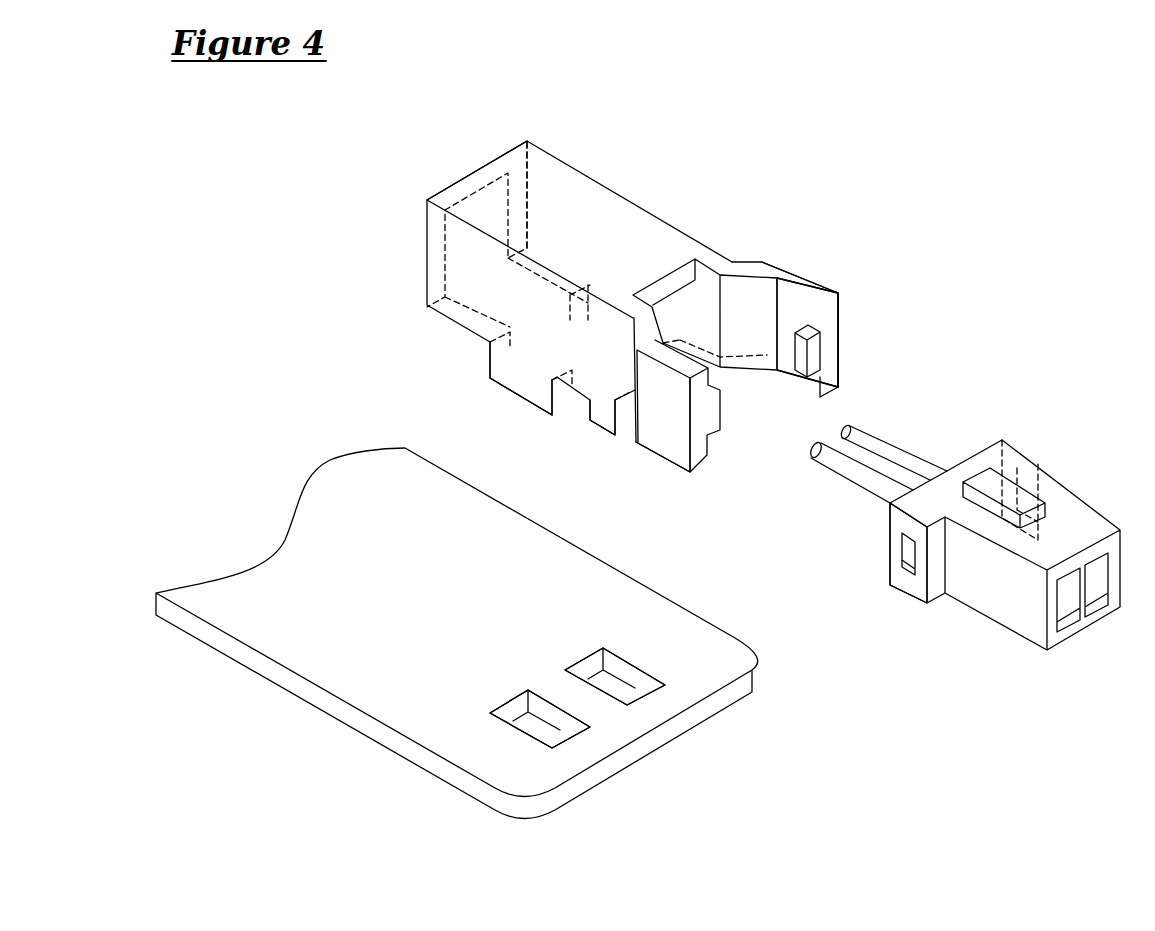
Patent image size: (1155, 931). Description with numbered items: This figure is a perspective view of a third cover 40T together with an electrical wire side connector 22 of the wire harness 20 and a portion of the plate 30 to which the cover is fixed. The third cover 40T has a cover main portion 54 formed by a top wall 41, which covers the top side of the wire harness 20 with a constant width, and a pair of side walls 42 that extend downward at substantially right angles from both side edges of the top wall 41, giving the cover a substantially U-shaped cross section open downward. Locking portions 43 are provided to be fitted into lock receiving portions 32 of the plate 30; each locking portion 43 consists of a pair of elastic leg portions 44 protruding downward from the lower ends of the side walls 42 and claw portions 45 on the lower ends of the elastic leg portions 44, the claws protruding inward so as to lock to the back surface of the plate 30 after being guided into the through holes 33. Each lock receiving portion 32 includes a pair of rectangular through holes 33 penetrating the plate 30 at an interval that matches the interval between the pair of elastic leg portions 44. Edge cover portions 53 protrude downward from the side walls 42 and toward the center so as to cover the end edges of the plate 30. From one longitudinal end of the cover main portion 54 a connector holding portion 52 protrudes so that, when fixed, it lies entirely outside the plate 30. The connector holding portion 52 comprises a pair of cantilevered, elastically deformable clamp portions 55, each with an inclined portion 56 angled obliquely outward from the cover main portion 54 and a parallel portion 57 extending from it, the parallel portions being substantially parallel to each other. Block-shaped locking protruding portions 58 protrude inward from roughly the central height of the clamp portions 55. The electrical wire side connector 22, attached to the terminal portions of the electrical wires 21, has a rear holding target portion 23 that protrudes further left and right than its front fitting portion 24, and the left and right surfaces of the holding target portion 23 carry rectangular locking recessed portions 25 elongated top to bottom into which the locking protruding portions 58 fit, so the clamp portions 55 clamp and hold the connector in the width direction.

The third cover 40T is at (663, 298).
The top wall 41 is at (598, 200).
The side walls 42 is at (618, 240).
The locking portions 43 is at (575, 437).
The elastic leg portions 44 is at (632, 300).
The claw portions 45 is at (612, 340).
The connector holding portion 52 is at (817, 283).
The edge cover portions 53 is at (682, 388).
The cover main portion 54 is at (543, 178).
The clamp portions 55 is at (705, 453).
The inclined portions 56 is at (755, 290).
The parallel portions 57 is at (808, 313).
The locking protruding portions 58 is at (722, 398).
The wire harness 20 is at (974, 540).
The electrical wires 21 is at (862, 490).
The electrical wire side connector 22 is at (1077, 510).
The holding target portion 23 is at (933, 580).
The fitting portion 24 is at (1030, 627).
The locking recessed portions 25 is at (1013, 490).
The plate 30 is at (457, 659).
The lock receiving portions 32 is at (638, 633).
The through holes 33 is at (618, 672).